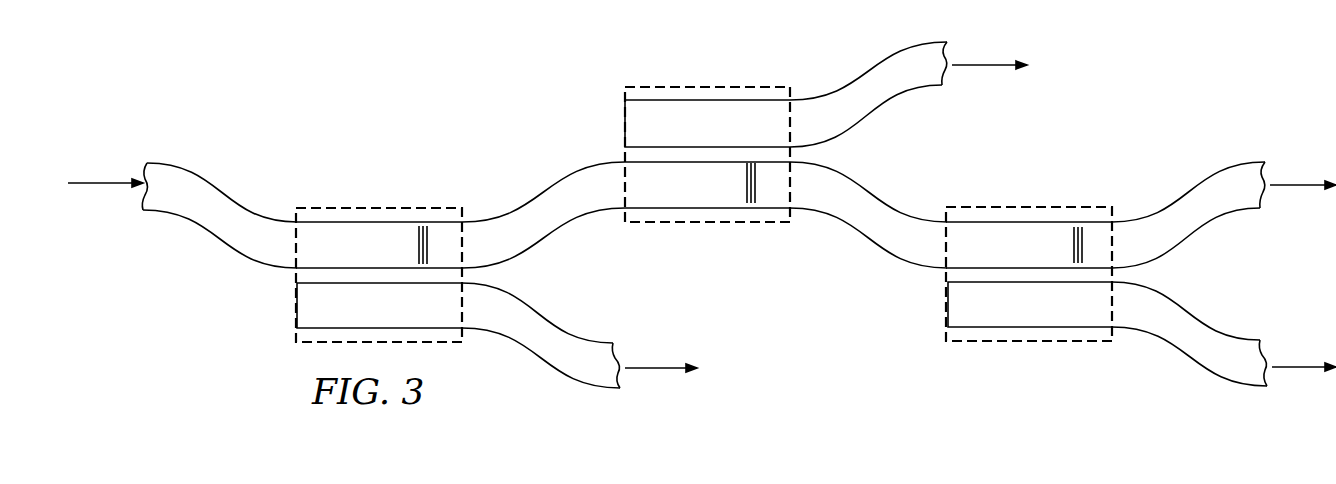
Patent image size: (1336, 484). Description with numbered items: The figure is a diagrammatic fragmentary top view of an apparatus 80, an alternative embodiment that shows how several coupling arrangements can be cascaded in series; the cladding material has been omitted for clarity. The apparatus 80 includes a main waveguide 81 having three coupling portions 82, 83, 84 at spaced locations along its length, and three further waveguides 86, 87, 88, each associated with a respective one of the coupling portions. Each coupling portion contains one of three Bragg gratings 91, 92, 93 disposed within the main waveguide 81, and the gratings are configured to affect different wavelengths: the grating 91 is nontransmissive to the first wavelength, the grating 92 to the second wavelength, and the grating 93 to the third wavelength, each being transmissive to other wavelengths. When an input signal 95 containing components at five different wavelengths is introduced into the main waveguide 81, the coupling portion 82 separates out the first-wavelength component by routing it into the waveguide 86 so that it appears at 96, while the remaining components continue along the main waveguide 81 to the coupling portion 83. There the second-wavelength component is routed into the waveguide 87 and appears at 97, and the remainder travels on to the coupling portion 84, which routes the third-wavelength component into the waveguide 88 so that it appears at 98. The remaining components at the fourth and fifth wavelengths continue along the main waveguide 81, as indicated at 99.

The apparatus 80 is at (470, 136).
The main waveguide 81 is at (1186, 192).
The coupling portion 82 is at (362, 207).
The coupling portion 83 is at (686, 226).
The coupling portion 84 is at (1048, 205).
The further waveguide 86 is at (535, 357).
The further waveguide 87 is at (885, 101).
The further waveguide 88 is at (1189, 357).
The Bragg grating 91 is at (416, 245).
The Bragg grating 92 is at (743, 184).
The Bragg grating 93 is at (1071, 244).
The input signal 95 is at (104, 186).
The output of wavelength λ1 component 96 is at (659, 374).
The output of wavelength λ2 component 97 is at (988, 70).
The output of wavelength λ3 component 98 is at (1290, 371).
The remaining signal output 99 is at (1299, 191).